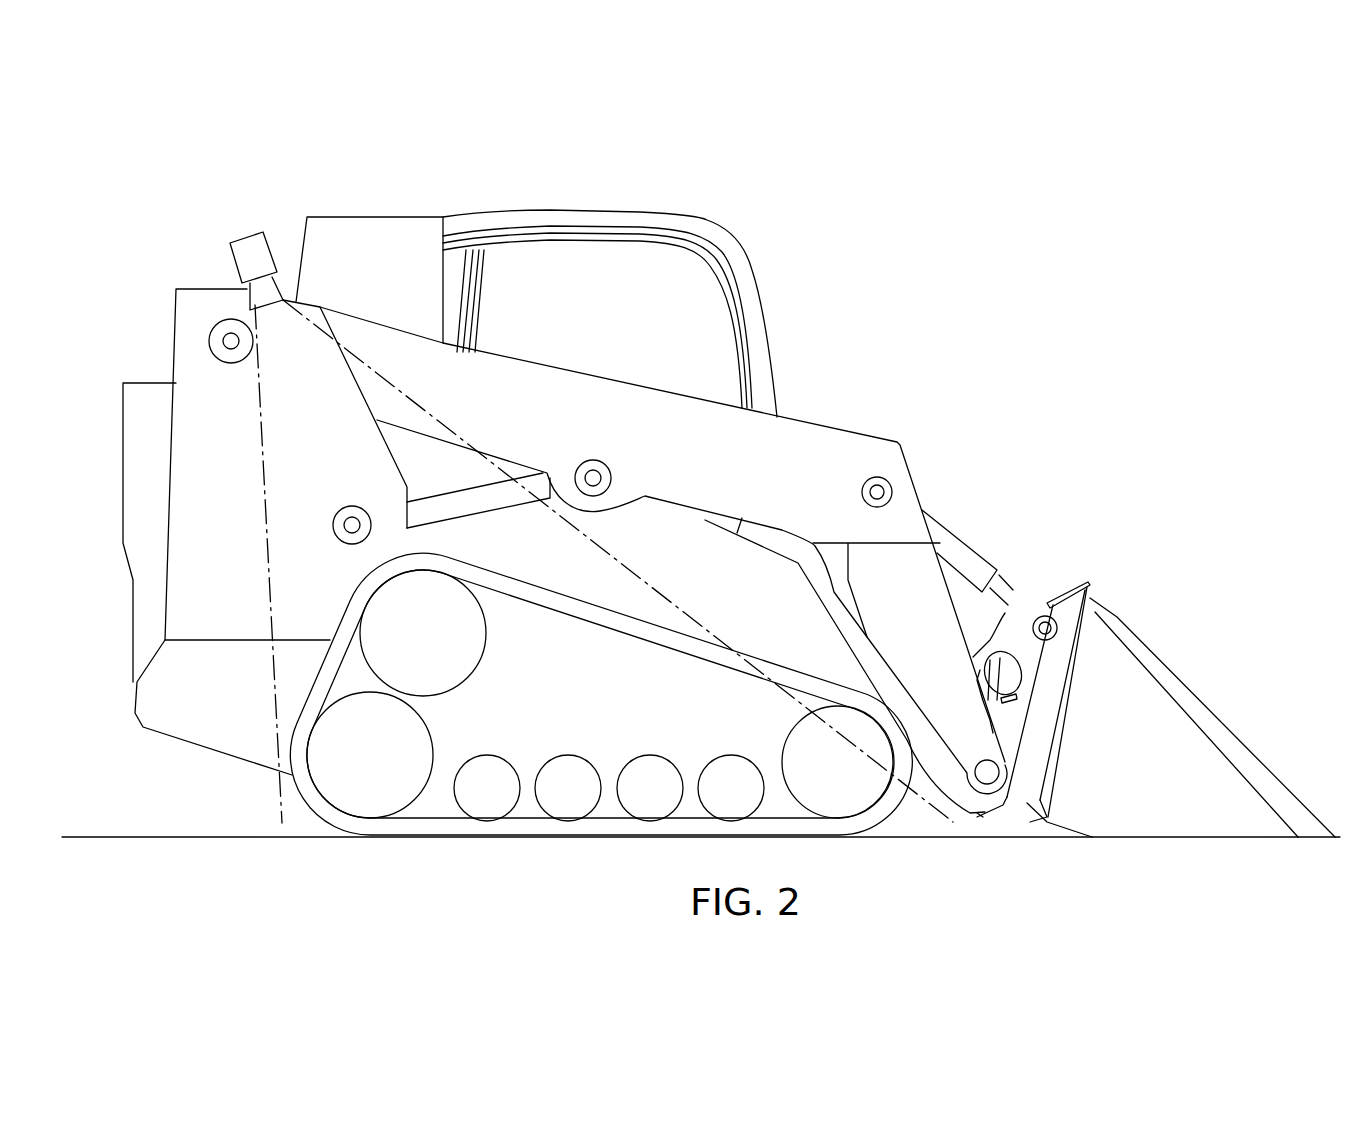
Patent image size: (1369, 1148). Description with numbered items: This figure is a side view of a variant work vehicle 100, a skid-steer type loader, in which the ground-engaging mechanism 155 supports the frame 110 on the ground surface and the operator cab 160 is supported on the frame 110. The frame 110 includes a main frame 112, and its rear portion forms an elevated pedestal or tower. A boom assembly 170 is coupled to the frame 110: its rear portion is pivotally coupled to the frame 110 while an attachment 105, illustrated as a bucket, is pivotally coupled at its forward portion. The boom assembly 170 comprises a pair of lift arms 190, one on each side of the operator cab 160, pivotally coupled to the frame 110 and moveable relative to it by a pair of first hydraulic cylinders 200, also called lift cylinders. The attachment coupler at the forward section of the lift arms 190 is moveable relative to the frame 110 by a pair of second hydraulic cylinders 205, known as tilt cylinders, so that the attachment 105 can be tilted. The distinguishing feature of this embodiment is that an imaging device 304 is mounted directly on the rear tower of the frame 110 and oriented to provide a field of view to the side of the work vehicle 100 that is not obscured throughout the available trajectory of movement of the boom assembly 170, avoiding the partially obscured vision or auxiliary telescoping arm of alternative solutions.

The work vehicle 100 is at (1041, 137).
The attachment 105 is at (1215, 730).
The frame 110 is at (259, 455).
The main frame 112 is at (353, 517).
The ground-engaging mechanism 155 is at (640, 640).
The operator cab 160 is at (617, 222).
The boom assembly 170 is at (1132, 500).
The lift arms 190 is at (820, 468).
The first hydraulic cylinders 200 is at (467, 502).
The second hydraulic cylinders 205 is at (1012, 583).
The imaging device 304 is at (252, 250).